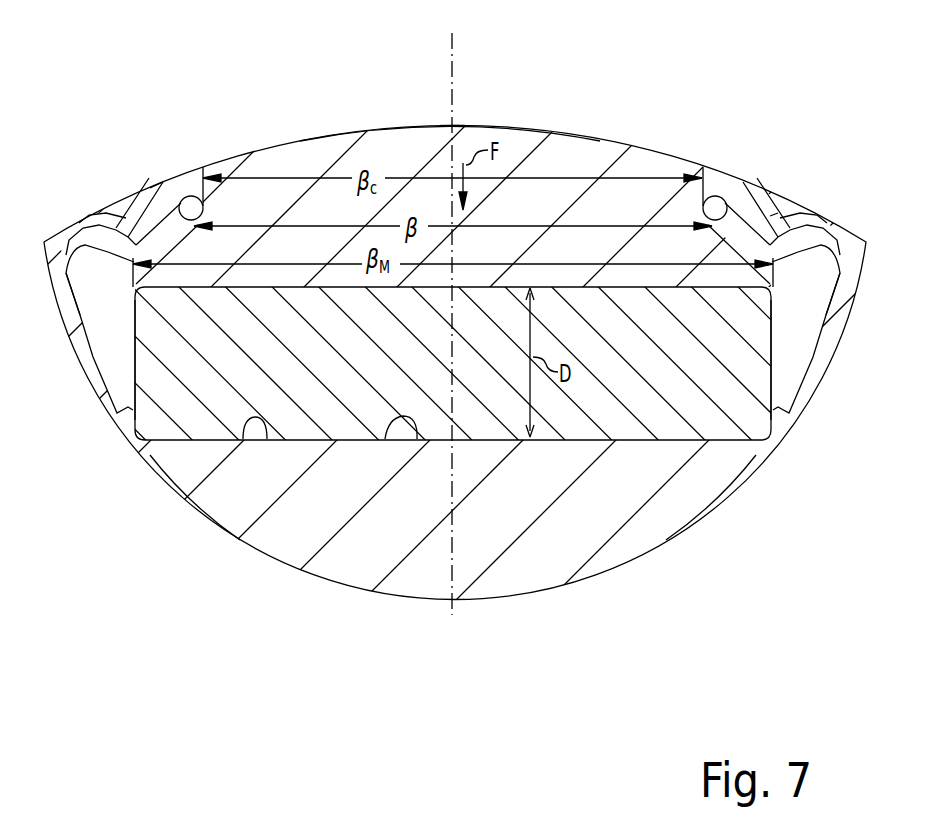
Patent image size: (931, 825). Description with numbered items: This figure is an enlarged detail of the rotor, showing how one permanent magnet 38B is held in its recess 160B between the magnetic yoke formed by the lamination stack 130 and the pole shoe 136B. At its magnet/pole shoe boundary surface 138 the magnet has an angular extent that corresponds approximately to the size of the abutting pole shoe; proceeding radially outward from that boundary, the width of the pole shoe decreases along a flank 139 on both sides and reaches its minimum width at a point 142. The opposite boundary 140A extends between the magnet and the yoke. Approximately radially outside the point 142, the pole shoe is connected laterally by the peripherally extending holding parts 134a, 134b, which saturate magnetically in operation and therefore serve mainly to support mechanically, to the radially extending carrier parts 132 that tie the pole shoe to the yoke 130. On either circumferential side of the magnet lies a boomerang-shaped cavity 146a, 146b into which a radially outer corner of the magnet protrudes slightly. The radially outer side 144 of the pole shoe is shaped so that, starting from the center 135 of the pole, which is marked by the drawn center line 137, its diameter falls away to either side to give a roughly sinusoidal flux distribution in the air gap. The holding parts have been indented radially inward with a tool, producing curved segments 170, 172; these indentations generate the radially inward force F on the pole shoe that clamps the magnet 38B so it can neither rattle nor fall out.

The lamination stack 130 is at (556, 577).
The carrier parts 132 is at (100, 383).
The holding part 134a is at (768, 207).
The holding part 134b is at (135, 205).
The center 135 is at (476, 126).
The rotor pole shoe 136B is at (553, 134).
The center axis 137 is at (453, 52).
The magnet/pole shoe boundary surface 138 is at (290, 335).
The flank 139 is at (190, 196).
The boundary 140A is at (417, 439).
The point 142 is at (192, 196).
The radially outer side 144 is at (407, 126).
The cavity 146a is at (110, 318).
The cavity 146b is at (797, 327).
The recess 160B is at (277, 441).
The curved segment 170 is at (150, 188).
The curved segment 172 is at (778, 213).
The permanent magnet 38B is at (200, 422).